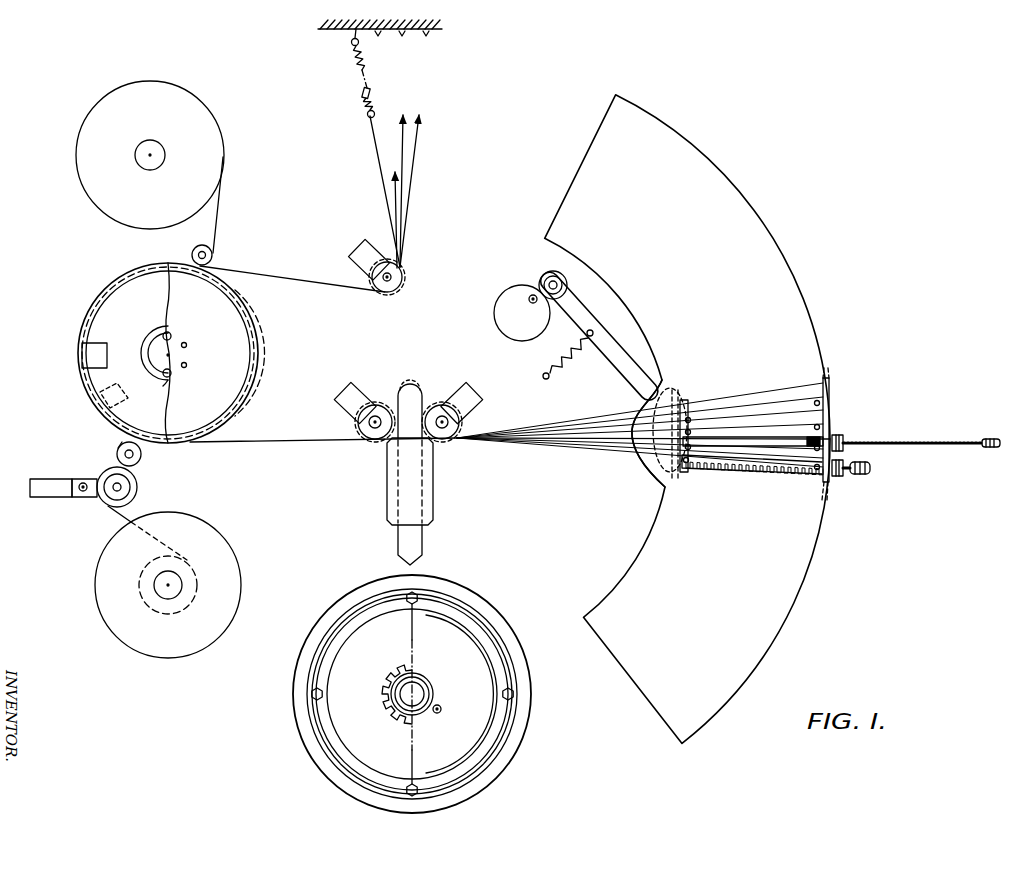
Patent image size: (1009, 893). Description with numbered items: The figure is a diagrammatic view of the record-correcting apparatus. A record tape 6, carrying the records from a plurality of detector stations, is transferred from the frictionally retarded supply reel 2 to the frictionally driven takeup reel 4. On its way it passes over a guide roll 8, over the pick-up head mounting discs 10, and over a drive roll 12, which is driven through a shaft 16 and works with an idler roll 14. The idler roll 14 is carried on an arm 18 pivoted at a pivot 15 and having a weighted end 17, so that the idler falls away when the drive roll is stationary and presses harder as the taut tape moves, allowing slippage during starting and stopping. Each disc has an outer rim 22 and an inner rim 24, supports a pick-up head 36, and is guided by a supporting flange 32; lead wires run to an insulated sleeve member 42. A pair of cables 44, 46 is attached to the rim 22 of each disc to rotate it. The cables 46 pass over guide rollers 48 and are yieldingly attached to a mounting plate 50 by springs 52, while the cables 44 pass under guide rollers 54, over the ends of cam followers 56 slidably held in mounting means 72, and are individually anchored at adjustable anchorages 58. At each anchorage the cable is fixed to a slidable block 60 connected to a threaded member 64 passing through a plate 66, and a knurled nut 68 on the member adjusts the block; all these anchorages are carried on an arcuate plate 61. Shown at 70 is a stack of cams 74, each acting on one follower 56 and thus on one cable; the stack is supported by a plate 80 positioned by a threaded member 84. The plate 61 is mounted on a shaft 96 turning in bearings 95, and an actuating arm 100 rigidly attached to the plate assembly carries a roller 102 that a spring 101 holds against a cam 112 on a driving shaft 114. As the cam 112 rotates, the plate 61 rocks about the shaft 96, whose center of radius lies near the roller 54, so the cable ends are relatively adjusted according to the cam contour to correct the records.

The record tape mounting reel 2 is at (88, 134).
The takeup reel 4 is at (100, 577).
The record tape 6 is at (219, 212).
The guide roll 8 is at (192, 251).
The pick-up head mounting discs 10 is at (62, 315).
The drive roll 12 is at (142, 455).
The idler roll 14 is at (138, 479).
The pivot 15 is at (83, 497).
The shaft 16 is at (118, 448).
The weighted end 17 is at (52, 486).
The arm 18 is at (76, 480).
The outer rim 22 is at (90, 378).
The inner rim 24 is at (164, 378).
The supporting flange 32 is at (243, 352).
The pick-up head 36 is at (101, 345).
The insulated sleeve member 42 is at (160, 333).
The cable 44 is at (276, 441).
The cable 46 is at (316, 288).
The guide roller 48 is at (388, 294).
The mounting plate 50 is at (330, 31).
The spring 52 is at (359, 89).
The guide roller 54 is at (387, 403).
The cam follower 56 is at (403, 430).
The adjustable anchorage 58 is at (729, 486).
The slidable block 60 is at (689, 468).
The plate 61 is at (804, 585).
The threaded member 64 is at (876, 447).
The plate 66 is at (830, 412).
The knurled nut 68 is at (840, 474).
The stack of cams 70 is at (335, 577).
The mounting means 72 is at (386, 488).
The cam 74 is at (378, 575).
The plate 80 is at (317, 667).
The threaded member 84 is at (387, 684).
The bearing 95 is at (665, 393).
The shaft 96 is at (661, 479).
The actuating arm 100 is at (606, 373).
The spring 101 is at (574, 358).
The roller 102 is at (542, 273).
The cam 112 is at (500, 299).
The shaft 114 is at (535, 303).